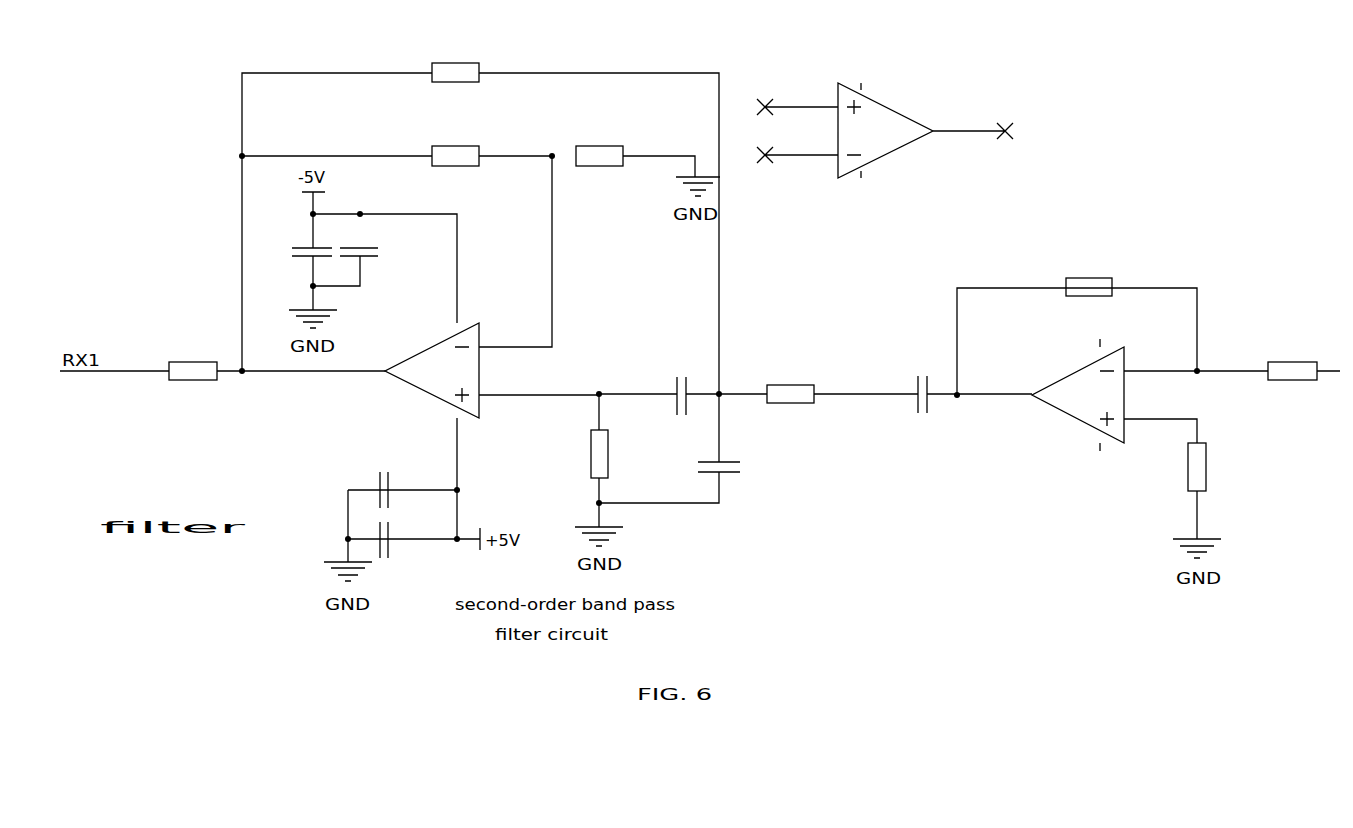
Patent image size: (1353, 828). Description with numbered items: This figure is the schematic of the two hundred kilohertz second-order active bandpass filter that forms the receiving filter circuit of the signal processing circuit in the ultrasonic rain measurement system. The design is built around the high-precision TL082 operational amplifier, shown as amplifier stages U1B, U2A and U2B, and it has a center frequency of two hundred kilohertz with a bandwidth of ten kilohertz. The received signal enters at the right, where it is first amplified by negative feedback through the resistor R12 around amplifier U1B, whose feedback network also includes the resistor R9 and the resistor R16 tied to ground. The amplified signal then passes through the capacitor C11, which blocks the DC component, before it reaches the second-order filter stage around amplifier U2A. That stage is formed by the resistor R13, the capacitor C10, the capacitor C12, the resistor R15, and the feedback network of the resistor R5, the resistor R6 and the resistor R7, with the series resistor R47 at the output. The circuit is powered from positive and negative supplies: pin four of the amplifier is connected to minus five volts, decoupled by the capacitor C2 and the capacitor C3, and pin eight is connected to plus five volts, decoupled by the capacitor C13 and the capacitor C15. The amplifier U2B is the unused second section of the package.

The resistor R5 820 ohm R5 is at (478, 74).
The resistor R6 2K ohm R6 is at (475, 157).
The resistor R7 2K ohm R7 is at (619, 157).
The resistor R47 0 ohm R47 is at (193, 373).
The resistor R13 820 ohm R13 is at (801, 397).
The resistor R15 1K ohm R15 is at (645, 454).
The resistor R9 20K ohm R9 is at (1115, 291).
The negative feedback resistor R12 is at (1285, 376).
The resistor R16 2K ohm R16 is at (1244, 467).
The capacitor C2 10uF C2 is at (300, 255).
The capacitor C3 0.1uF C3 is at (372, 266).
The capacitor C10 1nF C10 is at (661, 400).
The DC blocking capacitor C11 is at (926, 398).
The capacitor C12 1nF C12 is at (780, 479).
The capacitor C13 0.1uF C13 is at (412, 491).
The capacitor C15 10uF C15 is at (410, 541).
The operational amplifier U2A TL082CDR U2A is at (404, 372).
The operational amplifier U1B TL082CDR U1B is at (1079, 402).
The operational amplifier U2B TL082CDR U2B is at (885, 134).